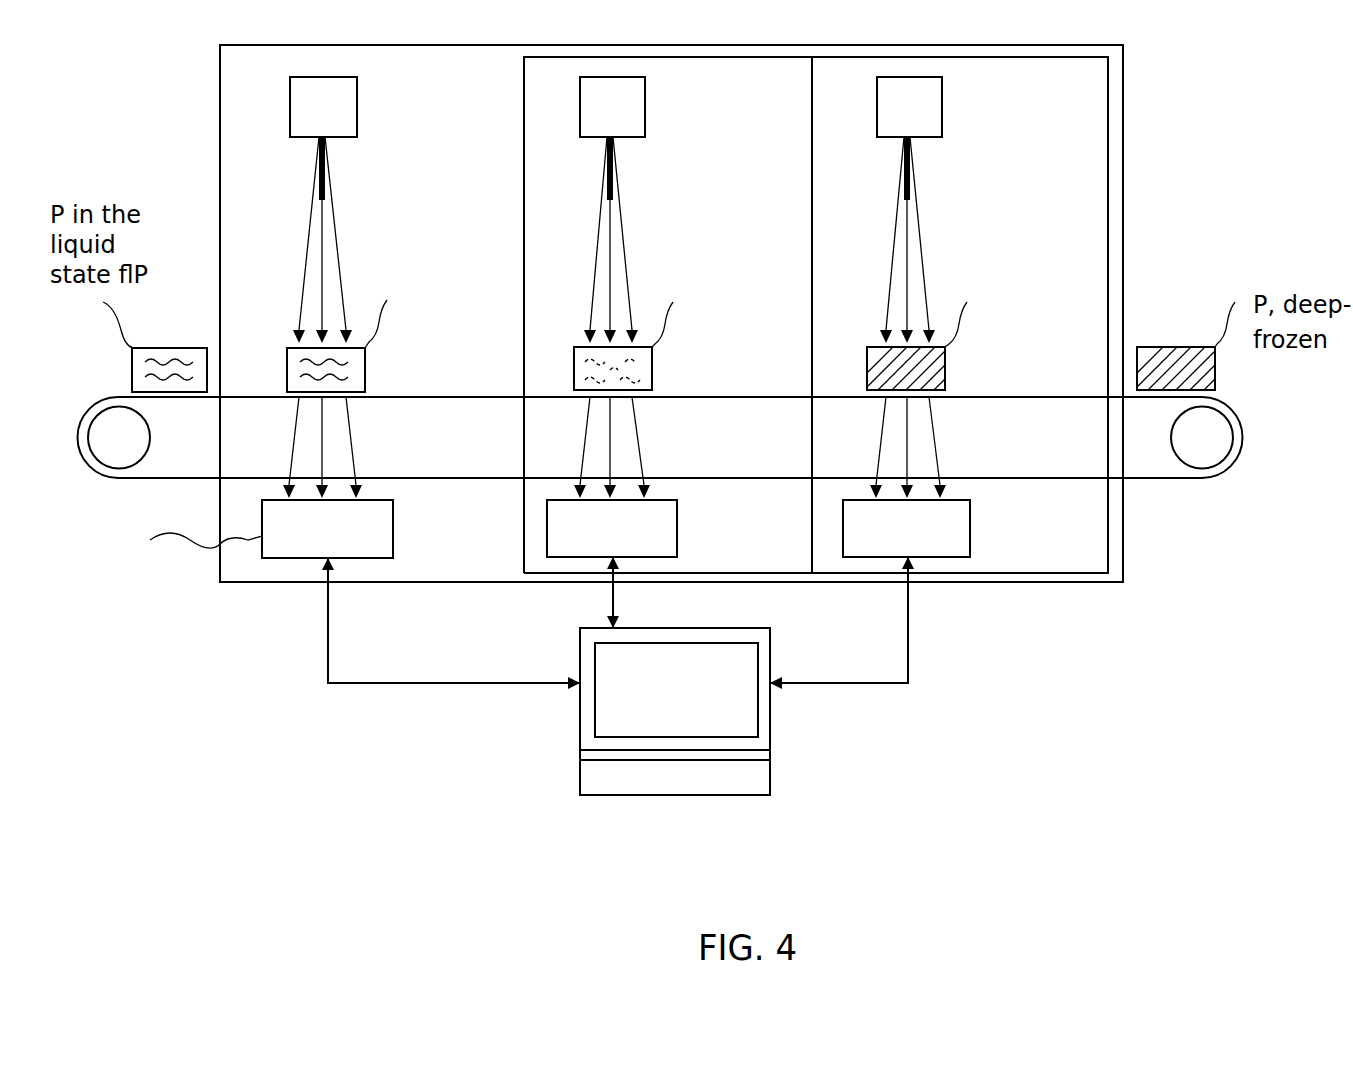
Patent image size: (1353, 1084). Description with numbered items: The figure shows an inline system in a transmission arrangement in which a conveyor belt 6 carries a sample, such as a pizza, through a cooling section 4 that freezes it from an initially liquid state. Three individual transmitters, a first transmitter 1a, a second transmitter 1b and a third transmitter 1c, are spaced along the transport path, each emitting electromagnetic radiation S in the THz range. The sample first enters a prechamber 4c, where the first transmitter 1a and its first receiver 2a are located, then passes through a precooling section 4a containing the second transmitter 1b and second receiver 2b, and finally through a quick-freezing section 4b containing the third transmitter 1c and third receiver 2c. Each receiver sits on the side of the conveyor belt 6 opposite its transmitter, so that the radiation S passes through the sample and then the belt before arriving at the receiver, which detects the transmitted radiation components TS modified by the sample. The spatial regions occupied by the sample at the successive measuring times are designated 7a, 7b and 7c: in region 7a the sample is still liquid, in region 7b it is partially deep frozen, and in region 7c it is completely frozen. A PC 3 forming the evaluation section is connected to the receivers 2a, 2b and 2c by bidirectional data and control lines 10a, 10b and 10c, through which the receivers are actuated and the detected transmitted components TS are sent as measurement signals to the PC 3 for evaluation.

The cooling section 4 is at (218, 84).
The precooling section 4a is at (668, 315).
The quick-freezing section 4b is at (960, 315).
The prechamber 4c is at (426, 165).
The first transmitter 1a is at (323, 107).
The second transmitter 1b is at (612, 107).
The third transmitter 1c is at (909, 107).
The first receiver 2a is at (235, 546).
The second receiver 2b is at (612, 528).
The third receiver 2c is at (906, 528).
The PC 3 is at (675, 711).
The conveyor belt 6 is at (1240, 447).
The spatial region 7a is at (381, 336).
The spatial region 7b is at (667, 334).
The spatial region 7c is at (969, 334).
The bidirectional data and control line 10a is at (328, 630).
The bidirectional data and control line 10b is at (613, 592).
The bidirectional data and control line 10c is at (908, 630).
The electromagnetic radiation S is at (310, 191).
The transmitted radiation components TS is at (352, 438).